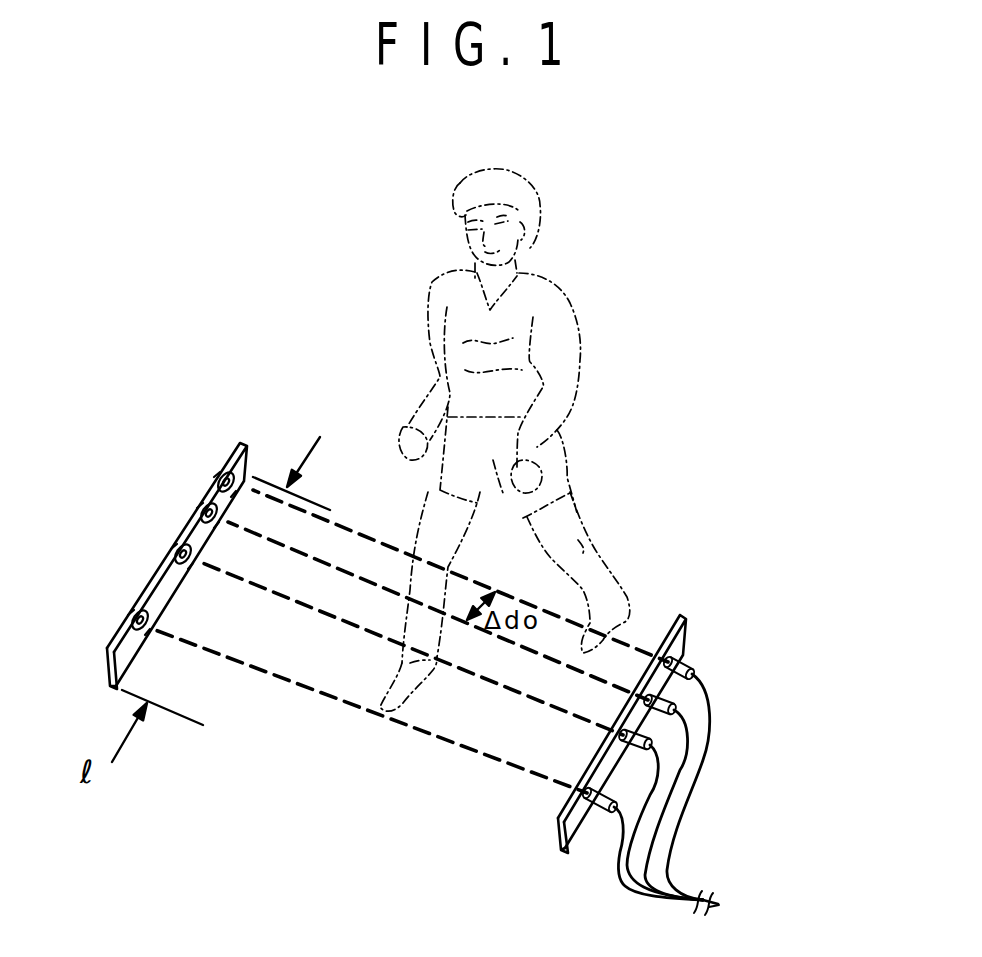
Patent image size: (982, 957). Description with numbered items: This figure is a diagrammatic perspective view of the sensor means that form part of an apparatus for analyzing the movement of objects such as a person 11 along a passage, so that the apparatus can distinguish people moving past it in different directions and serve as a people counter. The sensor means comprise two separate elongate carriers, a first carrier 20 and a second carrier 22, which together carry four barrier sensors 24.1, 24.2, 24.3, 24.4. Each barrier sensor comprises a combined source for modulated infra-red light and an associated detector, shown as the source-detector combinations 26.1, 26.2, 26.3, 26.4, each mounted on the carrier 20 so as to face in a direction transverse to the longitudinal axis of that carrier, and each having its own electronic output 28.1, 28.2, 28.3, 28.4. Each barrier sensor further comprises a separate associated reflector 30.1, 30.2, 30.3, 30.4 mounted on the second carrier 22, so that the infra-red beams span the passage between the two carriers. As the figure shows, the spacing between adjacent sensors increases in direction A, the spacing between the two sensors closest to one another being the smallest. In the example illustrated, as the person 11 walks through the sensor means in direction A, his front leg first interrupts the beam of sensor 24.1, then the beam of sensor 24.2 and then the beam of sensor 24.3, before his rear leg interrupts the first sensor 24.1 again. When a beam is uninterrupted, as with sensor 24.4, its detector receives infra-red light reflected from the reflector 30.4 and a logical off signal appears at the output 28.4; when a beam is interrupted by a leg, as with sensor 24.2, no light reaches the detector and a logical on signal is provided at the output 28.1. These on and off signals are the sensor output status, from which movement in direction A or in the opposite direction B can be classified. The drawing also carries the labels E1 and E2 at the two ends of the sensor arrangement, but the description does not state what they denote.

The person 11 is at (538, 213).
The elongate carrier 20 is at (554, 839).
The second carrier 22 is at (110, 685).
The barrier sensor 24.1 is at (704, 656).
The barrier sensor 24.2 is at (669, 726).
The barrier sensor 24.3 is at (636, 761).
The barrier sensor 24.4 is at (597, 830).
The source-detector combination 26.1 is at (690, 656).
The source-detector combination 26.2 is at (668, 707).
The source-detector combination 26.3 is at (651, 745).
The source-detector combination 26.4 is at (600, 800).
The electronic output 28.1 is at (695, 673).
The electronic output 28.2 is at (676, 716).
The electronic output 28.3 is at (655, 790).
The electronic output 28.4 is at (618, 806).
The reflector 30.1 is at (240, 448).
The reflector 30.2 is at (222, 498).
The reflector 30.3 is at (187, 541).
The reflector 30.4 is at (143, 604).
The entrance end of passage E1 is at (629, 565).
The exit end of passage E2 is at (319, 708).
The direction A is at (430, 490).
The direction B is at (580, 733).